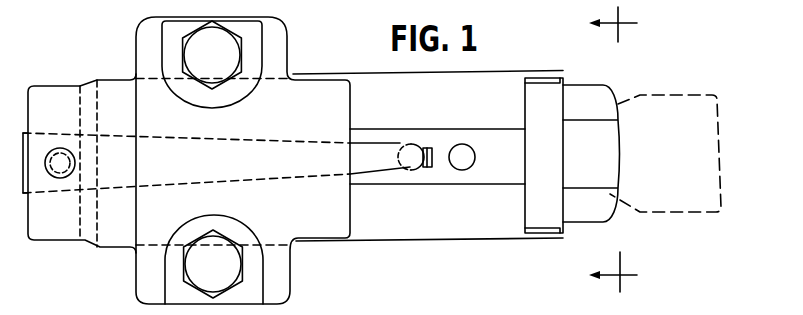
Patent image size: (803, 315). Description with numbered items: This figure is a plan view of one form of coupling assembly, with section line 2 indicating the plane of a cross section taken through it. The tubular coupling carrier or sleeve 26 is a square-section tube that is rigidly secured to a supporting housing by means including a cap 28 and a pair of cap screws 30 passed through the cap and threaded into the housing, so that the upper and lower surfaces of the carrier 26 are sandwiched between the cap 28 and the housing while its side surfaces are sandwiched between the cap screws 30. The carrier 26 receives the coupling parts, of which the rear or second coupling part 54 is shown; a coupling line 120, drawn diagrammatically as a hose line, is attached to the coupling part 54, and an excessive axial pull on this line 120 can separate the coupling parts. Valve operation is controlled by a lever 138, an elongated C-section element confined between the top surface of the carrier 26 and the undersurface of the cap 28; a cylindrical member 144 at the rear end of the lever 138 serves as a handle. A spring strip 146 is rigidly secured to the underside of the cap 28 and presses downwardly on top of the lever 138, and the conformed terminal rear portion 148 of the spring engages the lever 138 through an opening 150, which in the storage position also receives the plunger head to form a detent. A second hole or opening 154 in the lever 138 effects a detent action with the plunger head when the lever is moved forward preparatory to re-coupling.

The cap 28 is at (136, 36).
The cap screws 30 is at (215, 33).
The tubular coupling carrier or sleeve 26 is at (435, 232).
The lever 138 is at (513, 183).
The spring strip 146 is at (365, 148).
The opening 150 is at (410, 145).
The terminal rear portion of the spring 148 is at (428, 167).
The second hole or opening 154 is at (460, 148).
The member serving as handle 144 is at (535, 218).
The second or rear coupling part 54 is at (611, 82).
The coupling line 120 is at (699, 98).
The section line 2- 2 is at (613, 151).